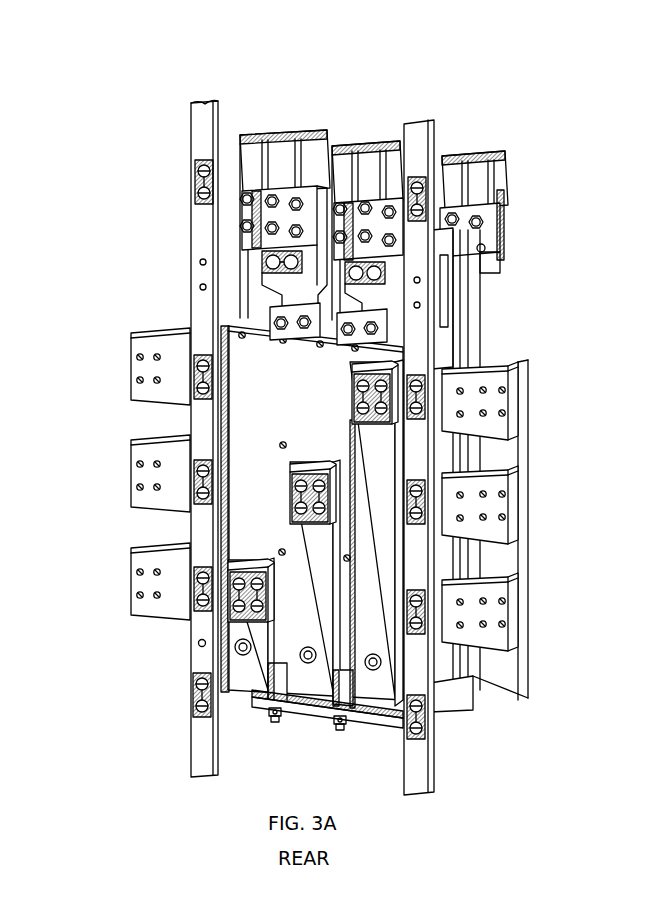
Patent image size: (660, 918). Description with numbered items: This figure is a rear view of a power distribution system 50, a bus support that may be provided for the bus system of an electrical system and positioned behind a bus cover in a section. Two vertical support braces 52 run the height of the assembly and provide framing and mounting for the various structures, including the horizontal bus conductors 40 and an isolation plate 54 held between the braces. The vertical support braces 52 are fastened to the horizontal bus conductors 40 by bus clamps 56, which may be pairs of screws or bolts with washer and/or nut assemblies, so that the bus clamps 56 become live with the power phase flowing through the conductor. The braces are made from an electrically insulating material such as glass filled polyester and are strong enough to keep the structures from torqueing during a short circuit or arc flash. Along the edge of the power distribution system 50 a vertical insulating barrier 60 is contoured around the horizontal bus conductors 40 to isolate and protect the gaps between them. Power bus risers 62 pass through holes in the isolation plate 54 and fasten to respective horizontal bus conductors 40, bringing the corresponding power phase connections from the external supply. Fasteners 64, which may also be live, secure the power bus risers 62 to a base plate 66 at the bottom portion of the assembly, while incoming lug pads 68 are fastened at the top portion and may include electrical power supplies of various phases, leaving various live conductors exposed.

The power distribution system 50 is at (515, 120).
The vertical support brace 52 is at (213, 757).
The isolation plate 54 is at (290, 392).
The bus clamp 56 is at (208, 352).
The vertical insulating barrier 60 is at (448, 343).
The power bus riser 62 is at (252, 560).
The fastener 64 is at (292, 724).
The base plate 66 is at (377, 722).
The incoming lug pad 68 is at (290, 120).
The horizontal bus conductor 40 is at (143, 370).